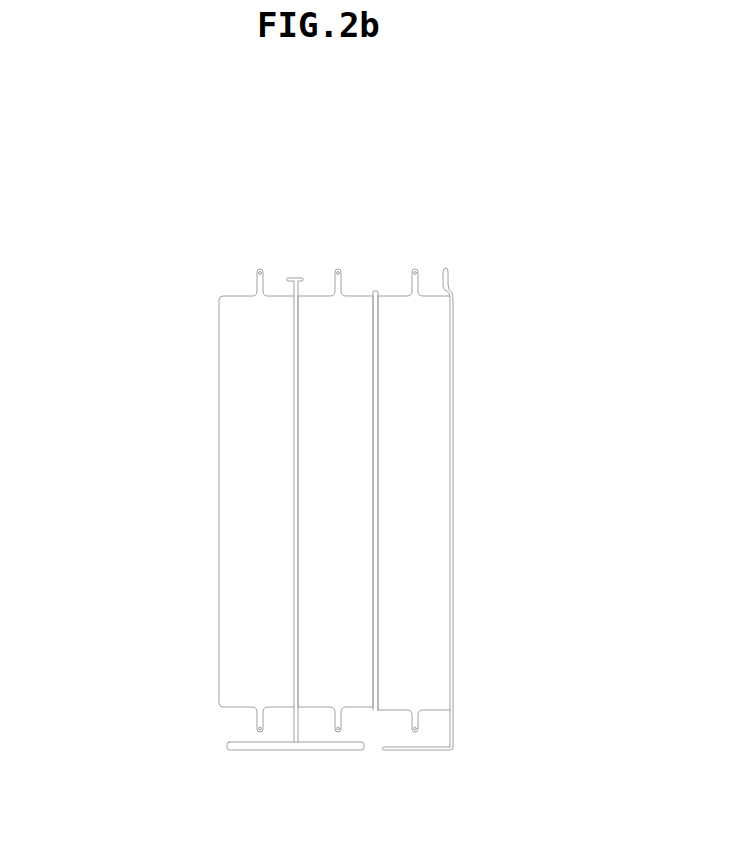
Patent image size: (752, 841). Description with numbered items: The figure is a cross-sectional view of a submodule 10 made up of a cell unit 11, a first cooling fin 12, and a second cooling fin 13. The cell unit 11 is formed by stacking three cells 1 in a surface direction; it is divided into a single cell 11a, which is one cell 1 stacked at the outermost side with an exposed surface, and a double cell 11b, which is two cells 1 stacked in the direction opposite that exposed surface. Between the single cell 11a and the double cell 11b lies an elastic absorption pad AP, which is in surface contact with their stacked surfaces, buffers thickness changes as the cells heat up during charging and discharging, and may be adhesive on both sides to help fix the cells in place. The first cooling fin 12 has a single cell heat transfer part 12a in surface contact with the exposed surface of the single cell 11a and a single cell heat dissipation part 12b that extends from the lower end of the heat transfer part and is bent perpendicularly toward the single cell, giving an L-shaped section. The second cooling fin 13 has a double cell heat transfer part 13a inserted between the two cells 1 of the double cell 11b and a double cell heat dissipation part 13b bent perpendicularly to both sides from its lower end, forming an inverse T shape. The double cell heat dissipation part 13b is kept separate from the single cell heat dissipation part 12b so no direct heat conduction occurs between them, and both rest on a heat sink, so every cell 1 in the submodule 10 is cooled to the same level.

The submodule 10 is at (62, 211).
The cell unit 11 is at (403, 133).
The single cell 11a is at (394, 303).
The double cell 11b is at (315, 178).
The cell 1 is at (238, 305).
The first cooling fin 12 is at (568, 685).
The single cell heat transfer part 12a is at (453, 683).
The single cell heat dissipation part 12b is at (422, 748).
The second cooling fin 13 is at (135, 694).
The double cell heat transfer part 13a is at (294, 677).
The double cell heat dissipation part 13b is at (277, 745).
The elastic absorption pad AP is at (373, 712).